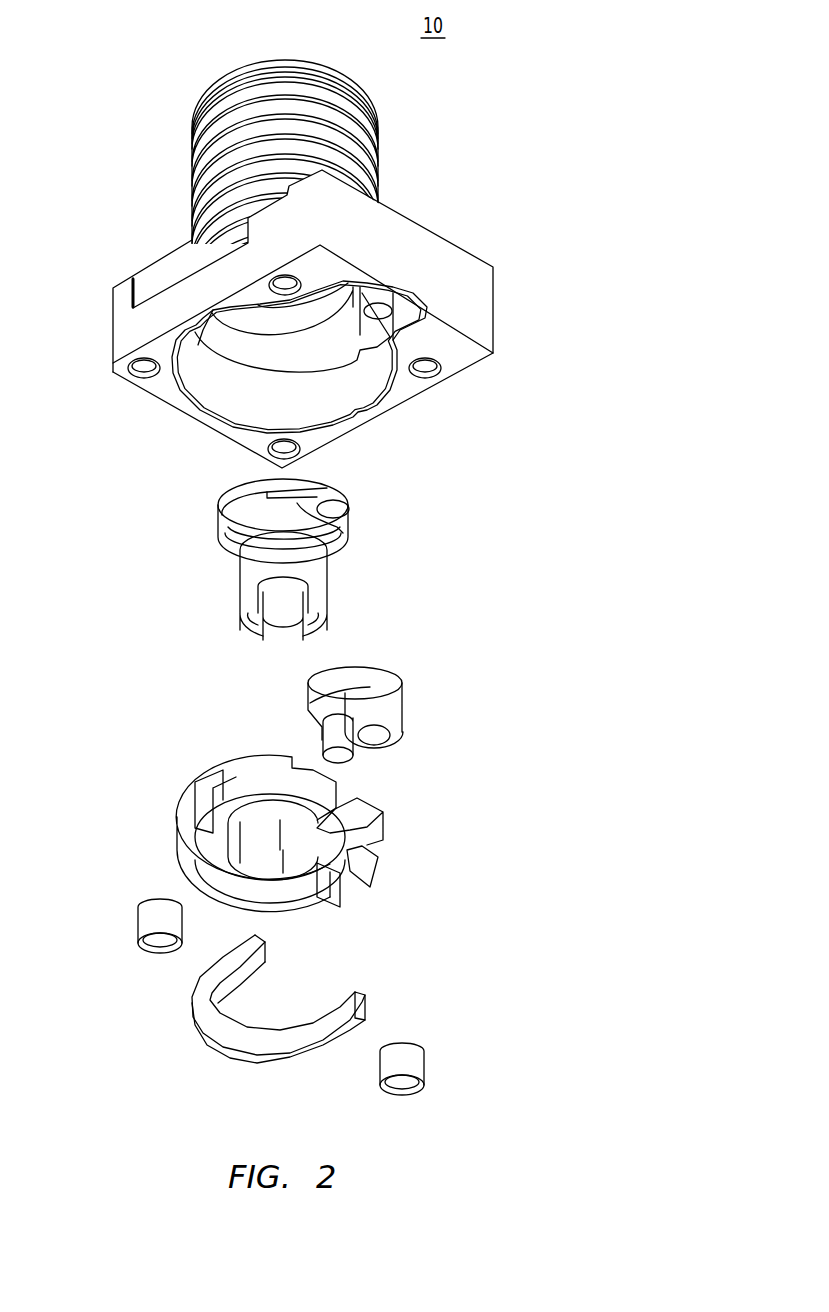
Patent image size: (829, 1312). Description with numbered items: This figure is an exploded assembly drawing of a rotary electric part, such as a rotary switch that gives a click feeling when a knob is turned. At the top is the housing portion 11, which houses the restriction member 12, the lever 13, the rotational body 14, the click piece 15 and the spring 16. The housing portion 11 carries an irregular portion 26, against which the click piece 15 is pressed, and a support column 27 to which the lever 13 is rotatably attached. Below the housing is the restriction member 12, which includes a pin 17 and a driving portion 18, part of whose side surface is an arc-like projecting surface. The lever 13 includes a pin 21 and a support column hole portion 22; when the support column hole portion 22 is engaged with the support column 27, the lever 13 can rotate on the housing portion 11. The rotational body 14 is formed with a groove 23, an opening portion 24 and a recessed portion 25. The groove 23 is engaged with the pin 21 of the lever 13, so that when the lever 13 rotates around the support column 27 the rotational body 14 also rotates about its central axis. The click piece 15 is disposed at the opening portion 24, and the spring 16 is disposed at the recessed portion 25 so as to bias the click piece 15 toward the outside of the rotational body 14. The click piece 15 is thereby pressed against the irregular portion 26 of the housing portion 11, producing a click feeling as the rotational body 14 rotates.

The housing portion 11 is at (288, 264).
The restriction member 12 is at (279, 559).
The lever 13 is at (379, 729).
The rotational body 14 is at (283, 844).
The click piece 15 is at (140, 922).
The spring 16 is at (258, 1054).
The pin 17 is at (343, 490).
The driving portion 18 is at (333, 548).
The pin 21 is at (343, 758).
The support column hole portion 22 is at (380, 738).
The groove 23 is at (387, 820).
The opening portion 24 is at (195, 815).
The recessed portion 25 is at (298, 862).
The irregular portion 26 is at (137, 357).
The support column 27 is at (428, 338).